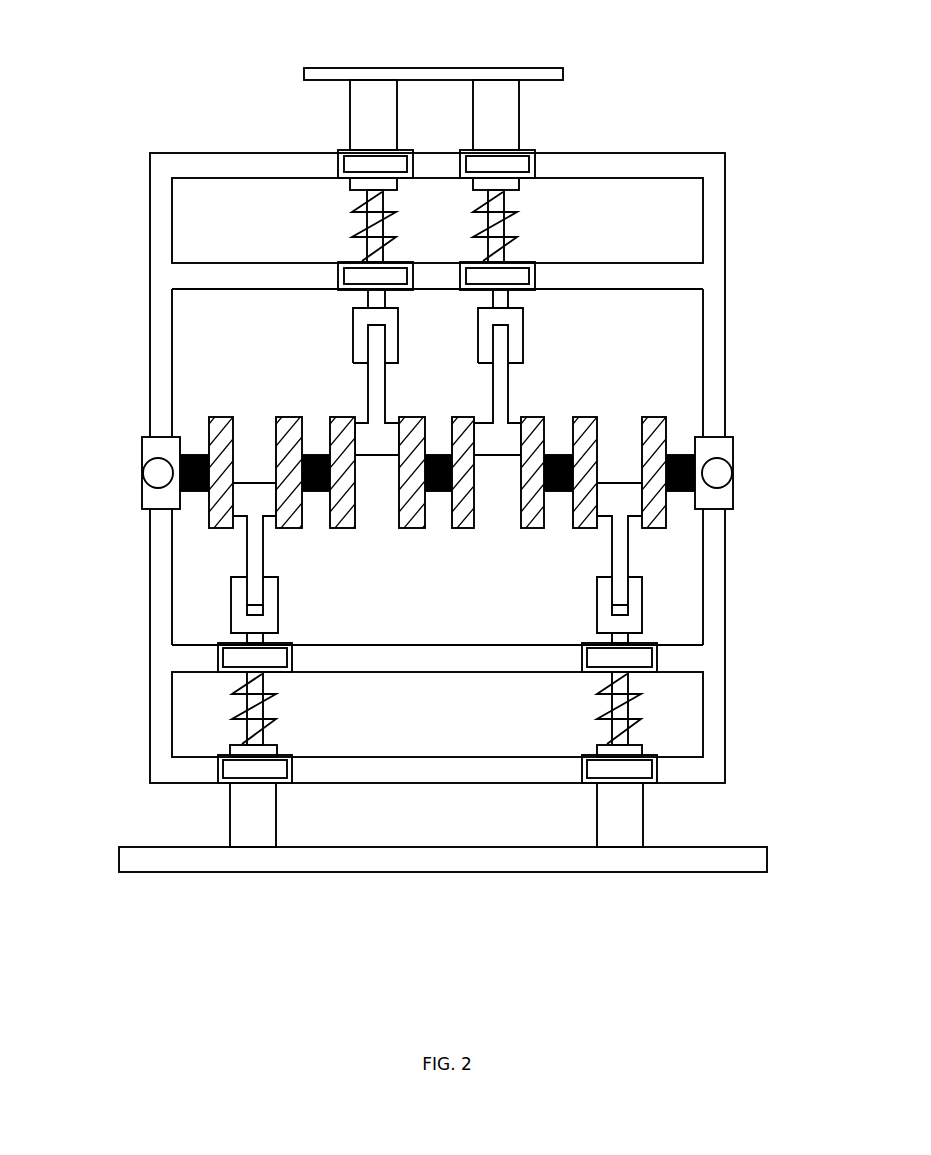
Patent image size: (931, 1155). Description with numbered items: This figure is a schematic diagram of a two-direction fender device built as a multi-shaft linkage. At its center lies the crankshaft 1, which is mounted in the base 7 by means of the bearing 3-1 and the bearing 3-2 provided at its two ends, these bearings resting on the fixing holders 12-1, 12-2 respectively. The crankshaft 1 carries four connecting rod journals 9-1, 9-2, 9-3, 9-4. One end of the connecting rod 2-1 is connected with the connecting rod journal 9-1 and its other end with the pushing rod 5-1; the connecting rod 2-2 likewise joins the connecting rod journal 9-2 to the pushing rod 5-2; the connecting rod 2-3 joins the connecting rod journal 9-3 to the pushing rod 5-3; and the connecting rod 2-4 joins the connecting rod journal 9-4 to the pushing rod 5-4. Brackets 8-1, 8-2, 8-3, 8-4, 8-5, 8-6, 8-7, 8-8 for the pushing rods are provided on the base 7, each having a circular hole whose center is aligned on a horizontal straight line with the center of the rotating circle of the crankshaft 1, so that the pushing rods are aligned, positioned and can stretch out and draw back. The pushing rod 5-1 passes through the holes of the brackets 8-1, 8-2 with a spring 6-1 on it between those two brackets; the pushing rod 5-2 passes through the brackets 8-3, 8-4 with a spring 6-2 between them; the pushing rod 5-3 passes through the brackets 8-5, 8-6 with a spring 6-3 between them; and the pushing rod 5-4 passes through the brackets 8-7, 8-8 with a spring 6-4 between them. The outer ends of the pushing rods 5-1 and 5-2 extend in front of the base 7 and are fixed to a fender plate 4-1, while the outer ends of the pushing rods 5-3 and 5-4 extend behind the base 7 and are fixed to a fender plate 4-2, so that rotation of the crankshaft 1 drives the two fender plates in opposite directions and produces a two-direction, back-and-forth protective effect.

The crankshaft 1 is at (194, 443).
The connecting rod 2-1 is at (265, 552).
The connecting rod 2-2 is at (612, 552).
The connecting rod 2-3 is at (366, 385).
The connecting rod 2-4 is at (505, 385).
The bearing 3-1 is at (155, 473).
The bearing 3-2 is at (720, 473).
The fender plate 4-1 is at (408, 872).
The fender plate 4-2 is at (431, 68).
The pushing rod 5-1 is at (230, 808).
The pushing rod 5-2 is at (645, 808).
The pushing rod 5-3 is at (342, 118).
The pushing rod 5-4 is at (524, 122).
The spring 6-1 is at (282, 723).
The spring 6-2 is at (585, 702).
The spring 6-3 is at (330, 243).
The spring 6-4 is at (530, 245).
The base 7 is at (712, 153).
The bracket for the pushing rod 8-1 is at (277, 783).
The bracket for the pushing rod 8-2 is at (288, 645).
The bracket for the pushing rod 8-3 is at (590, 783).
The bracket for the pushing rod 8-4 is at (595, 645).
The bracket for the pushing rod 8-5 is at (348, 165).
The bracket for the pushing rod 8-6 is at (347, 290).
The bracket for the pushing rod 8-7 is at (535, 158).
The bracket for the pushing rod 8-8 is at (530, 290).
The connecting rod journal 9-1 is at (263, 483).
The connecting rod journal 9-2 is at (612, 482).
The connecting rod journal 9-3 is at (385, 443).
The connecting rod journal 9-4 is at (503, 443).
The fixing holder 12-1 is at (150, 443).
The fixing holder 12-2 is at (727, 443).